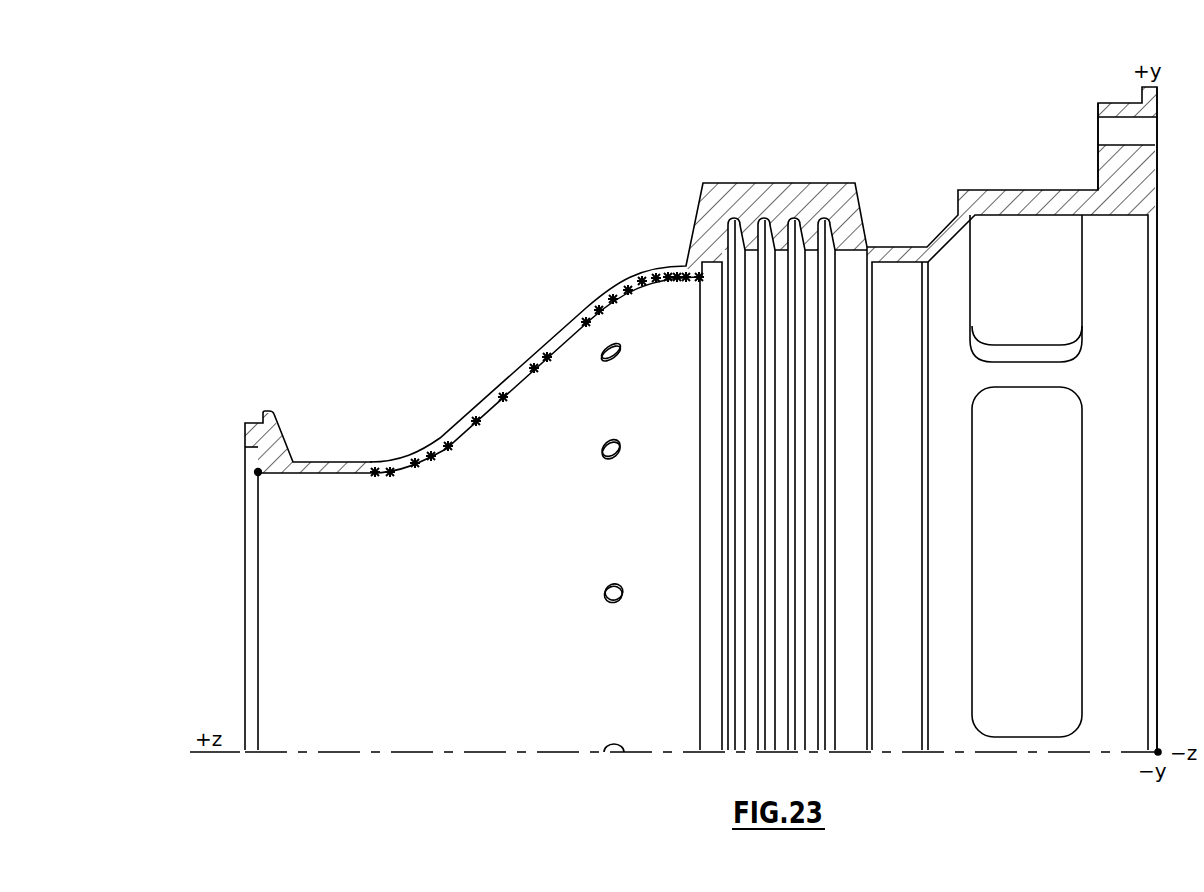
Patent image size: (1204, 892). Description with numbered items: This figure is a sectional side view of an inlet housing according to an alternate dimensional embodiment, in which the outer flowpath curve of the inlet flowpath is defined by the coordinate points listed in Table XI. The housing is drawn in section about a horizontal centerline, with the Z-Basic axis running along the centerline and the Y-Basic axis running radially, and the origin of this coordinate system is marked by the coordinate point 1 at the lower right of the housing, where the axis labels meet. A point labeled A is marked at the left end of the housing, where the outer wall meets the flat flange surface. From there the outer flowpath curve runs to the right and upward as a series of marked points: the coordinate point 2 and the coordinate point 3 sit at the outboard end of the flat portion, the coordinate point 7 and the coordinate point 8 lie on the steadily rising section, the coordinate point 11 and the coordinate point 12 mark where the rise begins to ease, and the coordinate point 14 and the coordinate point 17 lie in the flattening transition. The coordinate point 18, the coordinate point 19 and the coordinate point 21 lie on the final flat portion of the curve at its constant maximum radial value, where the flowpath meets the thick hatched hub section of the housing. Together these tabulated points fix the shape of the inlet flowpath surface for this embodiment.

The reference point A is at (257, 473).
The coordinate point 1 is at (1180, 419).
The coordinate point 2 is at (375, 470).
The coordinate point 3 is at (390, 470).
The coordinate point 7 is at (475, 421).
The coordinate point 8 is at (500, 390).
The coordinate point 11 is at (585, 321).
The coordinate point 12 is at (600, 309).
The coordinate point 14 is at (618, 287).
The coordinate point 17 is at (653, 279).
The coordinate point 18 is at (667, 277).
The coordinate point 19 is at (677, 277).
The coordinate point 21 is at (692, 277).